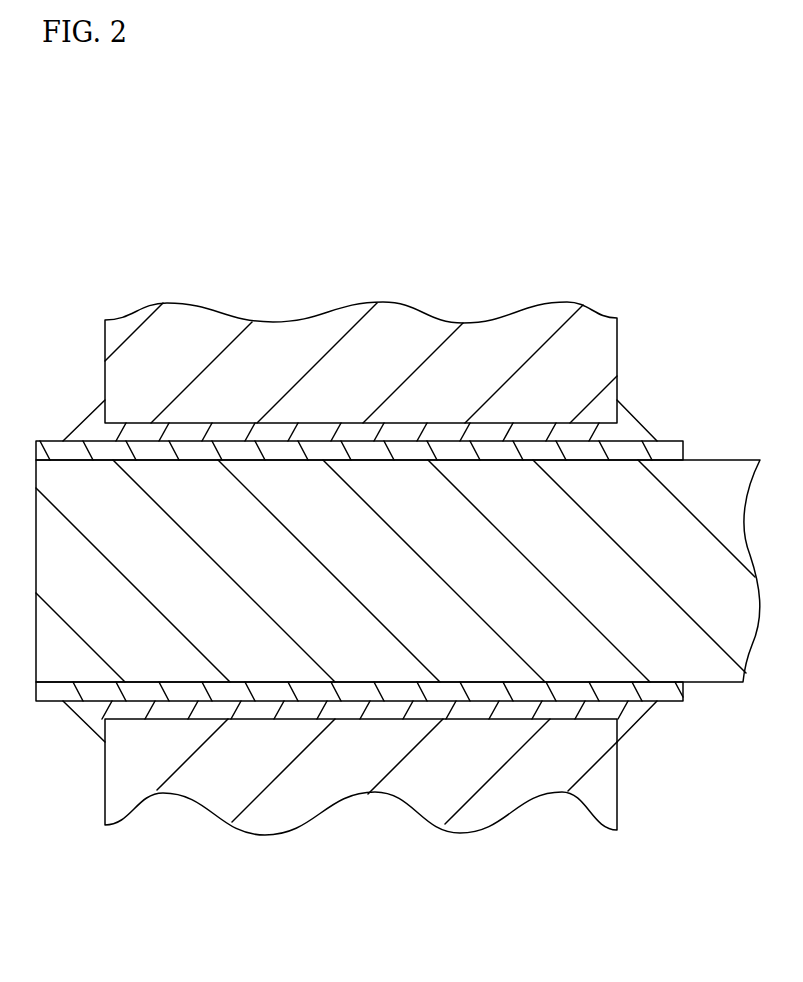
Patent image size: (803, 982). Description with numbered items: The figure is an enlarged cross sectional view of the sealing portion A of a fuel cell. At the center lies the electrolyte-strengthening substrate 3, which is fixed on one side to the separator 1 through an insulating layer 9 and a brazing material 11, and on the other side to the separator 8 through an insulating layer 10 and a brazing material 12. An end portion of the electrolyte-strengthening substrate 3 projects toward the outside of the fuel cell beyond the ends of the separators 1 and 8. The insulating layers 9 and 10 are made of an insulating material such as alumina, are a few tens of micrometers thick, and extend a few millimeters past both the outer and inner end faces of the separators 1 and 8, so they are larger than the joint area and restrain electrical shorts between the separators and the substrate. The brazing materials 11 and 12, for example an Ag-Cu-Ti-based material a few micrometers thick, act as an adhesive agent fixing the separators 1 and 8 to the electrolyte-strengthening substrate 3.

The sealing portion A is at (597, 232).
The separator 1 is at (610, 787).
The electrolyte-strengthening substrate 3 is at (707, 473).
The separator 8 is at (610, 357).
The insulating layer 9 is at (668, 690).
The insulating layer 10 is at (668, 452).
The brazing material 11 is at (633, 705).
The brazing material 12 is at (626, 420).